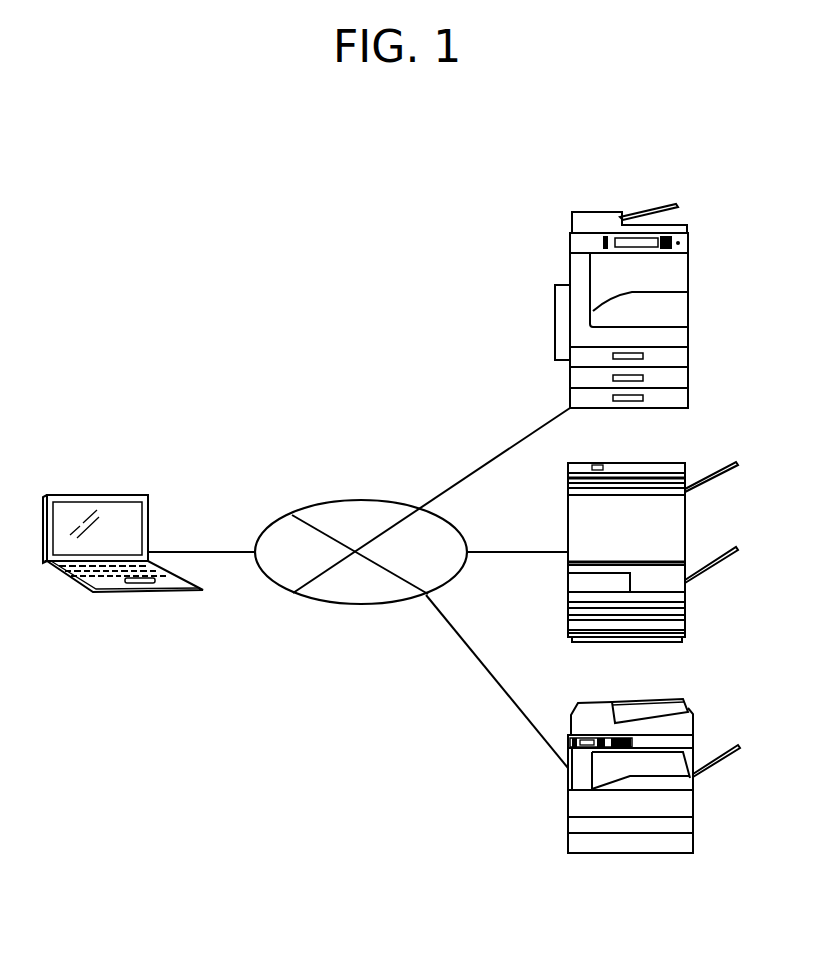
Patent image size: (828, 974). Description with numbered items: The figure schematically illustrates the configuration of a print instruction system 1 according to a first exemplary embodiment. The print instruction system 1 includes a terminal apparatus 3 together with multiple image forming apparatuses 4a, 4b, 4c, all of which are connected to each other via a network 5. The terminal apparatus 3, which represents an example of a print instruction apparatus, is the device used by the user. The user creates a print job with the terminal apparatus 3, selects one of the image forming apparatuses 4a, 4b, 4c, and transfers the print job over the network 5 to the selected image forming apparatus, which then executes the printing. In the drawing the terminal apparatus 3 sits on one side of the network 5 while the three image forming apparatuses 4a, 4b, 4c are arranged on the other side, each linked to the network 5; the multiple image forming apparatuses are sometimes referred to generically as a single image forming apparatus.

The print instruction system 1 is at (206, 234).
The terminal apparatus 3 is at (100, 492).
The image forming apparatus 4a is at (688, 268).
The image forming apparatus 4b is at (683, 467).
The image forming apparatus 4c is at (688, 712).
The network 5 is at (363, 498).